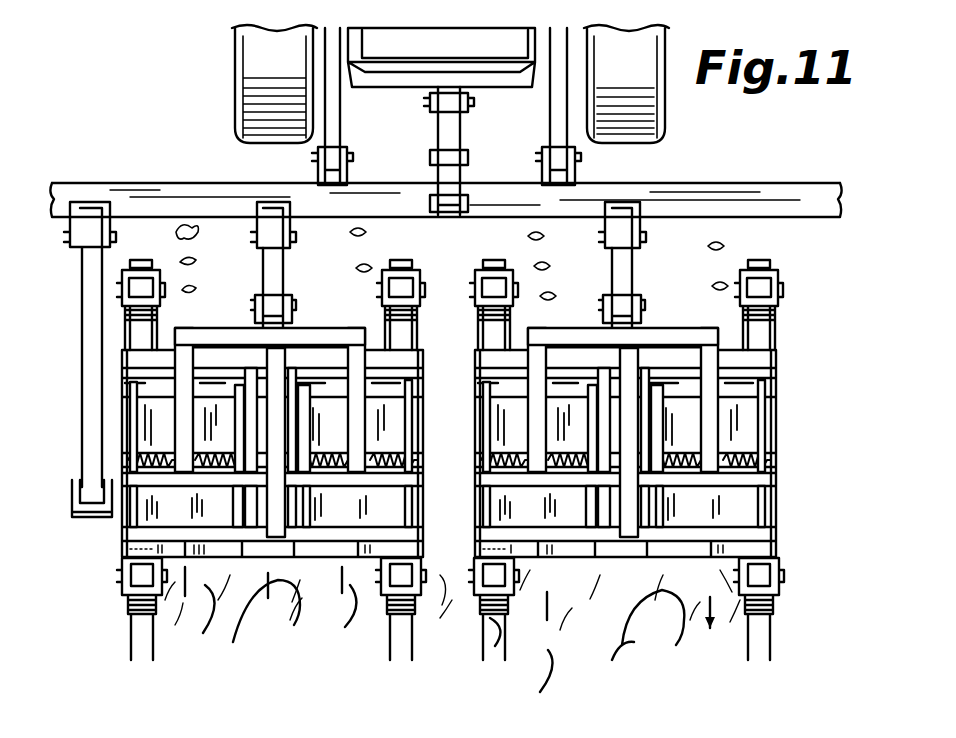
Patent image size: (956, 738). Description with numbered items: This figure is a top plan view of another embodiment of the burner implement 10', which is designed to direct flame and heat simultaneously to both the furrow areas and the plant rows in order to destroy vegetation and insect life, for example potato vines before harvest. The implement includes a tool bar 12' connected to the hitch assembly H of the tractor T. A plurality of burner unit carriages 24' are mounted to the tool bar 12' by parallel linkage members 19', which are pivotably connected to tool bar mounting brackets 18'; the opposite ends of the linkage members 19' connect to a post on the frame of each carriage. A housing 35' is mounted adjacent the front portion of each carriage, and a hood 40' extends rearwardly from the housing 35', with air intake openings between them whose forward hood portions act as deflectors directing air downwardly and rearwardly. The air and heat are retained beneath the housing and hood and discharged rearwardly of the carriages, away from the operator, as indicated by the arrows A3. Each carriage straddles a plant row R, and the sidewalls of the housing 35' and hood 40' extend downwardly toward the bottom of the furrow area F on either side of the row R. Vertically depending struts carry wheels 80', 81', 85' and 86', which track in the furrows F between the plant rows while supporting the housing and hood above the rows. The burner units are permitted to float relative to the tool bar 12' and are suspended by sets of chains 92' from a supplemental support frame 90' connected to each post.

The tractor T is at (434, 52).
The hitch assembly H is at (338, 125).
The tool bar 12' is at (445, 173).
The tool bar mounting brackets 18' is at (370, 324).
The parallel linkage members 19' is at (482, 281).
The wheel 80' is at (272, 250).
The wheel 81' is at (612, 250).
The burner implement 10' is at (43, 331).
The burner unit carriages 24' is at (431, 468).
The housing 35' is at (434, 405).
The supplemental support frame 90' is at (395, 432).
The chains 92' is at (436, 459).
The hood 40' is at (436, 509).
The wheel 85' is at (276, 609).
The wheel 86' is at (613, 609).
The plant row R is at (358, 645).
The furrow area F is at (447, 636).
The arrows A3 is at (460, 620).